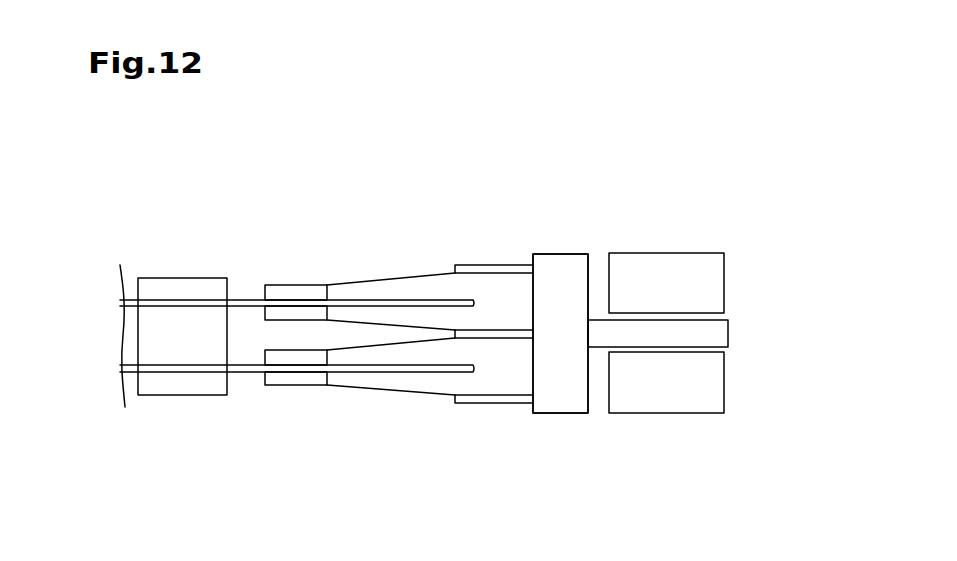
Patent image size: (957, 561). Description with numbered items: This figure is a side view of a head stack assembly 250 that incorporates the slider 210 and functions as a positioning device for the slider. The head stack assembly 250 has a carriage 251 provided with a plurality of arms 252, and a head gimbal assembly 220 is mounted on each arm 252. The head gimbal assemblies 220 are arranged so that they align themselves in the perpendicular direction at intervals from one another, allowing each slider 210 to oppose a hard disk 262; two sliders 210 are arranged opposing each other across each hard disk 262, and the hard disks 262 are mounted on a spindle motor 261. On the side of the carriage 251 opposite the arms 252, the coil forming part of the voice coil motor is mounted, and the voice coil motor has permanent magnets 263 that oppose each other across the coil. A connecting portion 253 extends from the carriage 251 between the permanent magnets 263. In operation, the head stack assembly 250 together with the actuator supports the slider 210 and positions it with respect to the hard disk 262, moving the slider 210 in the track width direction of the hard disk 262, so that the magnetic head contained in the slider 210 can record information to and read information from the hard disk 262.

The slider 210 is at (262, 292).
The head gimbal assembly 220 is at (387, 277).
The head stack assembly 250 is at (573, 220).
The carriage 251 is at (563, 403).
The arm 252 is at (472, 262).
The connecting portion 253 is at (718, 335).
The spindle motor 261 is at (162, 278).
The hard disk 262 is at (238, 298).
The permanent magnet 263 is at (660, 252).